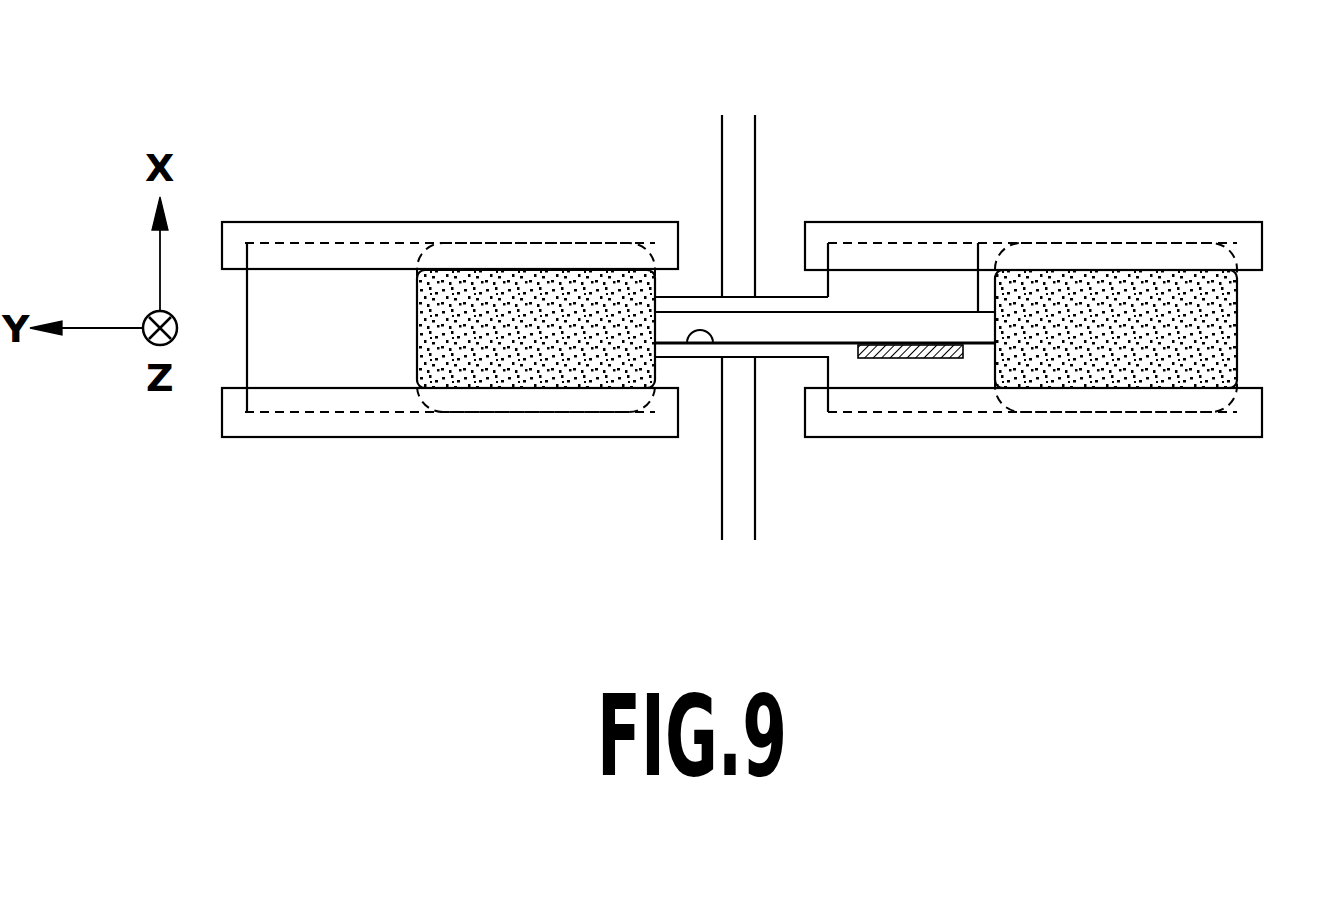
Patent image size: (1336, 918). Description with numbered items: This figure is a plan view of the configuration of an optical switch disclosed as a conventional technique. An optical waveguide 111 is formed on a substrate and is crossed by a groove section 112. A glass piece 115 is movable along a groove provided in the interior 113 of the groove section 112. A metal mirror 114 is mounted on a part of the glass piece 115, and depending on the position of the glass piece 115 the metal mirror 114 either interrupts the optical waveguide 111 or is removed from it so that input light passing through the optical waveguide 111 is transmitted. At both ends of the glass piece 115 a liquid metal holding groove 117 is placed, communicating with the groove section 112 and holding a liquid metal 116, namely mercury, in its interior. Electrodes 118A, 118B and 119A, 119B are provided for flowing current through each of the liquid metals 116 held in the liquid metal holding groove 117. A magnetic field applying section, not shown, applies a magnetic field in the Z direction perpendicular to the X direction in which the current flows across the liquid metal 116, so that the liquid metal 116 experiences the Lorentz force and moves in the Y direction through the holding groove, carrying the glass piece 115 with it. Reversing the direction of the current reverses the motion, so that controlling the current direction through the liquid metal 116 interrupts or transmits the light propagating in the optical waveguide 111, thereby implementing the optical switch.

The optical waveguide 111 is at (755, 137).
The groove section 112 is at (778, 357).
The interior of the groove section 113 is at (712, 346).
The metal mirror 114 is at (908, 358).
The glass piece 115 is at (978, 265).
The liquid metal 116 is at (535, 243).
The liquid metal holding groove 117 is at (248, 350).
The electrode 118A is at (262, 437).
The electrode 118B is at (250, 222).
The electrode 119A is at (1250, 437).
The electrode 119B is at (1248, 222).